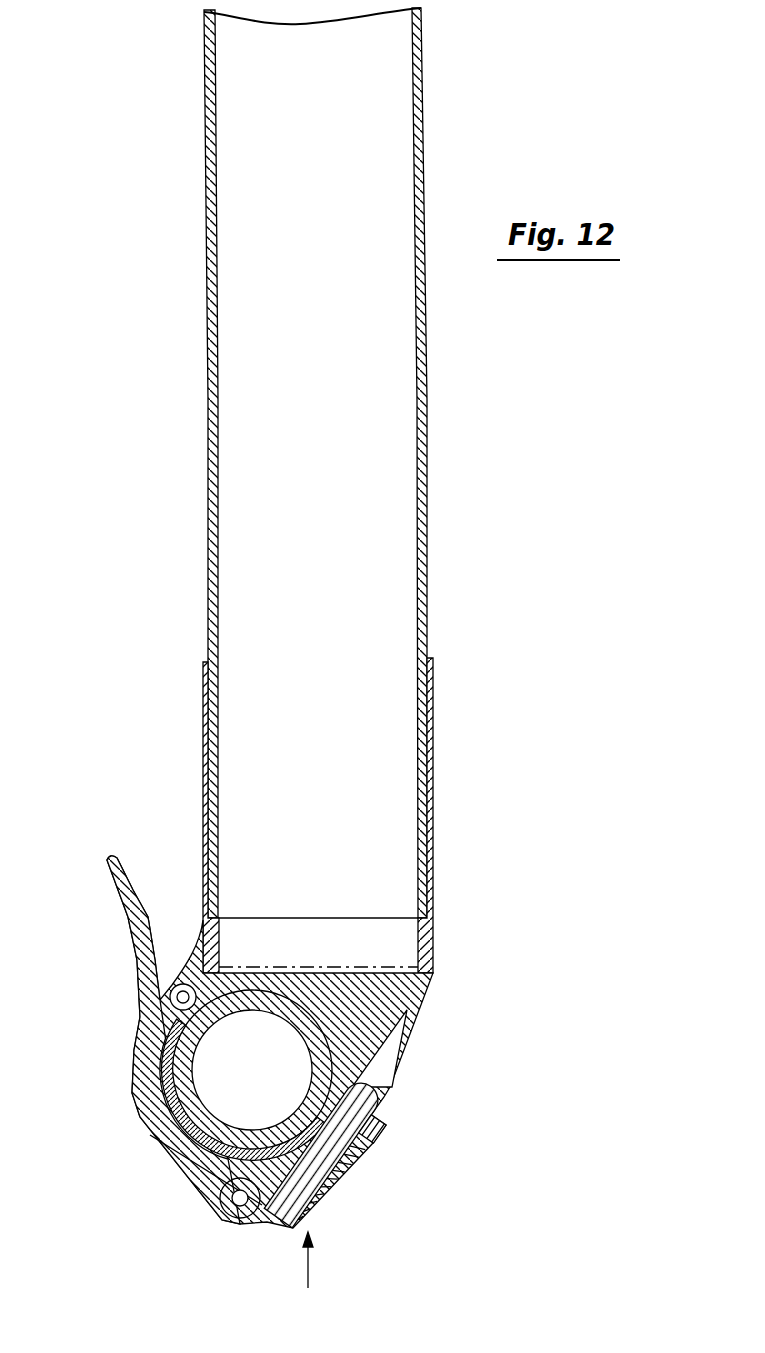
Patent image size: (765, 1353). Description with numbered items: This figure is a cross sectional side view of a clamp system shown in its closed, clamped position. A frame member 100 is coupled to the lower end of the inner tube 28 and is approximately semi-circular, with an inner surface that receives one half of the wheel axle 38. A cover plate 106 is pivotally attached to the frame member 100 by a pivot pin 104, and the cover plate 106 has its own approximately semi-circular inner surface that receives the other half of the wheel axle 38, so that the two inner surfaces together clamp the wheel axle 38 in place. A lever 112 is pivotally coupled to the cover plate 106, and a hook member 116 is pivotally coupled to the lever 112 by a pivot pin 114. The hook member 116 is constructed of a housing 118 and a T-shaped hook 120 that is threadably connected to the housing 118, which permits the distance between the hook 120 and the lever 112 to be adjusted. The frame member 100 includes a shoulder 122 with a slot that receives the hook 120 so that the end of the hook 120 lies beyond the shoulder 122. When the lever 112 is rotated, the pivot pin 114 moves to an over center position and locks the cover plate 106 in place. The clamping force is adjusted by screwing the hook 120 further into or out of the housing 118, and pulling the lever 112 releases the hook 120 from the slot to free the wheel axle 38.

The inner tube 28 is at (427, 523).
The frame member 100 is at (433, 748).
The pivot pin 104 is at (163, 985).
The cover plate 106 is at (160, 1068).
The lever 112 is at (133, 1100).
The wheel axle 38 is at (306, 1013).
The hook 120 is at (388, 1104).
The shoulder 122 is at (380, 1142).
The housing 118 is at (320, 1205).
The hook member 116 is at (310, 1276).
The pivot pin 114 is at (228, 1218).